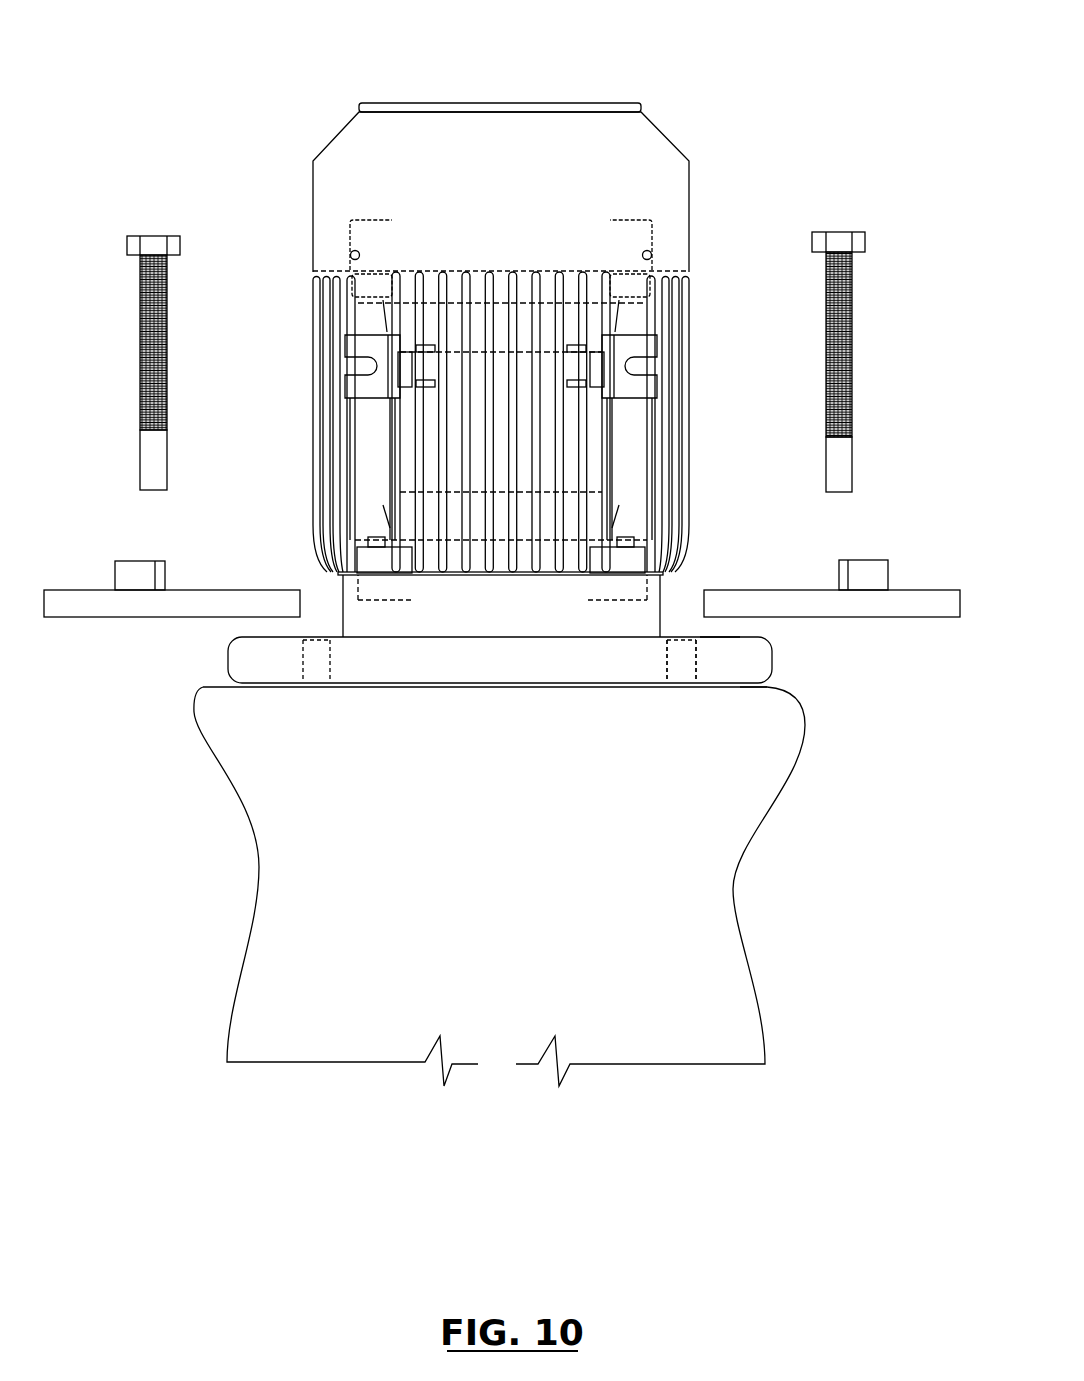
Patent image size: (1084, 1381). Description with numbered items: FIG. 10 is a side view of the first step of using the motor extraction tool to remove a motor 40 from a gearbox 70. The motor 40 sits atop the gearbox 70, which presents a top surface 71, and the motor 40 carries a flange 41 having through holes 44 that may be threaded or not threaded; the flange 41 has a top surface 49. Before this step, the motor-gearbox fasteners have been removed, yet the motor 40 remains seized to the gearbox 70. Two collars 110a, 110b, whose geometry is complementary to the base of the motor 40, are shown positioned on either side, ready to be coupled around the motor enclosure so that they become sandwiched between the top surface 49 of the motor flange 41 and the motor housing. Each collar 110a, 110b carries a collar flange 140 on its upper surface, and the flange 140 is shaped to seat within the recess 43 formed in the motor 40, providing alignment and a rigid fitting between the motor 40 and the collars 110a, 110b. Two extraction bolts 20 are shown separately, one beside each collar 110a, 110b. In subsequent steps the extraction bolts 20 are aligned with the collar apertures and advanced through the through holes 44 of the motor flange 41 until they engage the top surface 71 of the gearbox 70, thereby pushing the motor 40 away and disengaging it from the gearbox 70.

The motor 40 is at (316, 121).
The extraction bolt 20 is at (148, 313).
The recess 43 is at (343, 590).
The collar 110a is at (183, 607).
The collar 110b is at (782, 603).
The flange 140 is at (878, 573).
The through hole 44 is at (315, 658).
The top surface of the motor flange 49 is at (716, 636).
The motor flange 41 is at (713, 668).
The gearbox 70 is at (276, 795).
The top surface of the gearbox 71 is at (767, 687).